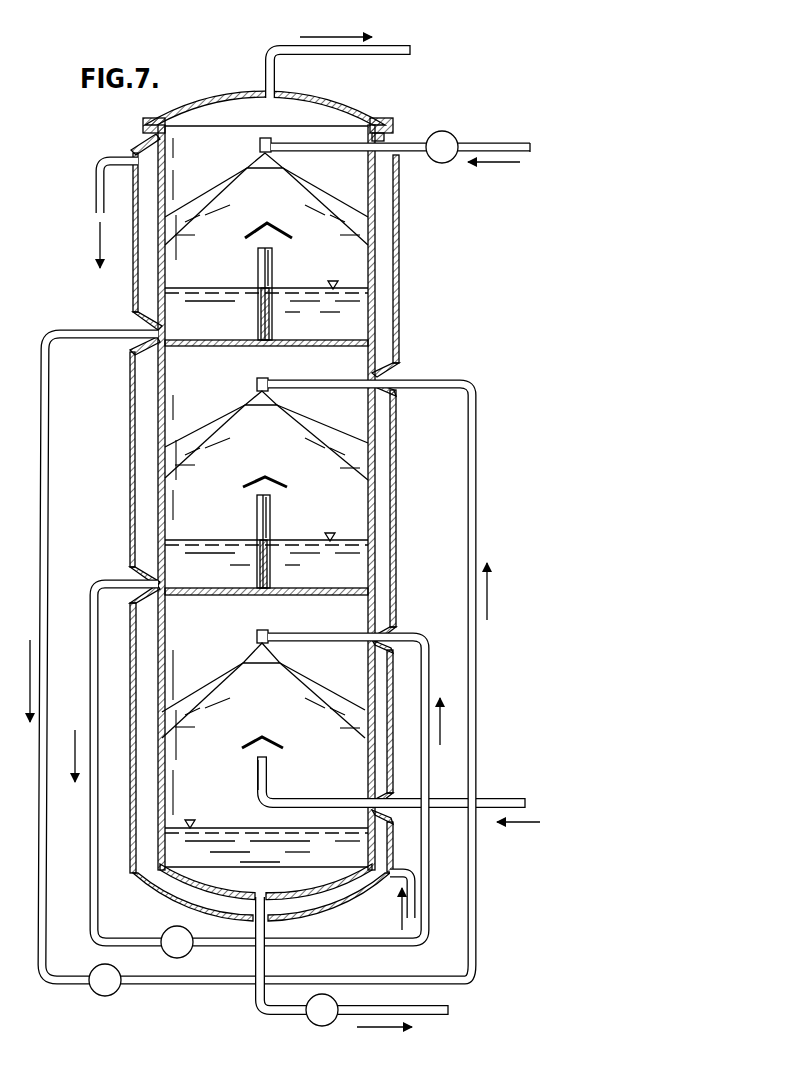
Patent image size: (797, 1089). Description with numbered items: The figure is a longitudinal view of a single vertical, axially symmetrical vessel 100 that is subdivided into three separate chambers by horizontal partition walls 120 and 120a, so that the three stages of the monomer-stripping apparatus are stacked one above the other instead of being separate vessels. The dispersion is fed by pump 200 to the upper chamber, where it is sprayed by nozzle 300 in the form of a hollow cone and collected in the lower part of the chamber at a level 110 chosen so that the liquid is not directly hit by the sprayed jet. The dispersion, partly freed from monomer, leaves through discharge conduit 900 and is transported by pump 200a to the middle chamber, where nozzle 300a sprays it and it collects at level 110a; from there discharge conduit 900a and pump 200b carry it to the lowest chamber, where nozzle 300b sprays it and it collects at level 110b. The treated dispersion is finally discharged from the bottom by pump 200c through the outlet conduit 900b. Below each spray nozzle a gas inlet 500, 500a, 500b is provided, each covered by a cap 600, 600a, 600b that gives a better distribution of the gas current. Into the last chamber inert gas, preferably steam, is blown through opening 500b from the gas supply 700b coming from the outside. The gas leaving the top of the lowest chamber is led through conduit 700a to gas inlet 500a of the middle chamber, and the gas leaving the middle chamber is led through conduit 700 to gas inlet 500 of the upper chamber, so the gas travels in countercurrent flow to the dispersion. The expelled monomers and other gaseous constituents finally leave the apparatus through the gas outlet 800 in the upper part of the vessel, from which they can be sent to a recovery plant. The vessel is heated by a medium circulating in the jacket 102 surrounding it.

The vessel 100 is at (158, 440).
The jacket 102 is at (396, 474).
The dispersion level 110 is at (178, 315).
The dispersion level 110a is at (172, 566).
The dispersion level 110b is at (175, 856).
The horizontal partition wall 120 is at (205, 347).
The horizontal partition wall 120a is at (203, 596).
The pump 200 is at (436, 162).
The pump 200a is at (98, 994).
The pump 200b is at (166, 930).
The pump 200c is at (312, 1022).
The spray nozzle 300 is at (266, 160).
The spray nozzle 300a is at (280, 400).
The spray nozzle 300b is at (280, 657).
The gas inlet 500 is at (272, 250).
The gas inlet 500a is at (271, 498).
The gas inlet 500b is at (268, 760).
The cap 600 is at (270, 225).
The cap 600a is at (270, 480).
The cap 600b is at (268, 738).
The gas supply conduit 700 is at (258, 268).
The gas supply conduit 700a is at (257, 518).
The gas supply 700b is at (500, 798).
The gas outlet 800 is at (290, 96).
The discharge conduit 900 is at (44, 504).
The discharge conduit 900a is at (92, 640).
The bottom product line 900b is at (440, 1008).